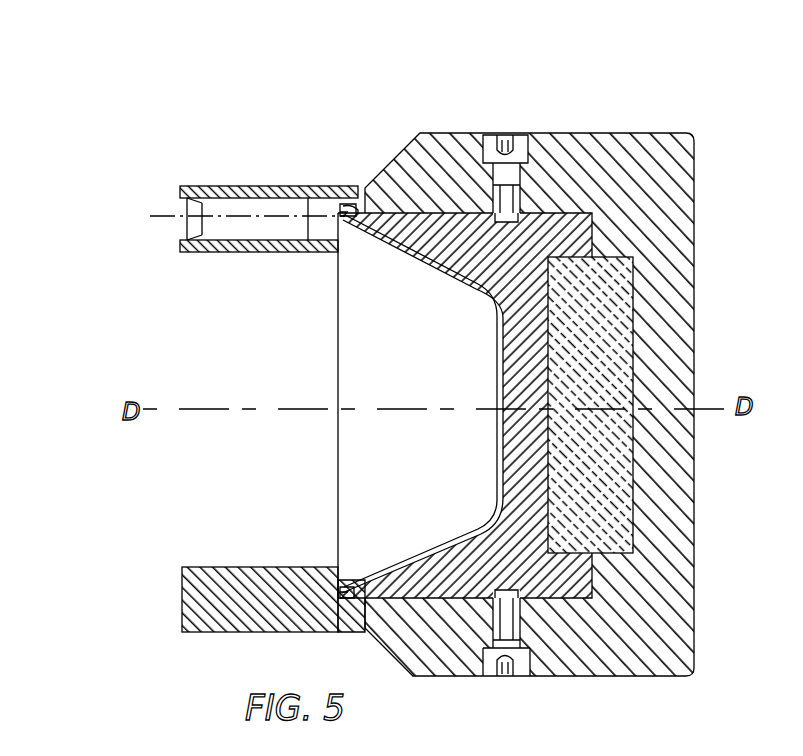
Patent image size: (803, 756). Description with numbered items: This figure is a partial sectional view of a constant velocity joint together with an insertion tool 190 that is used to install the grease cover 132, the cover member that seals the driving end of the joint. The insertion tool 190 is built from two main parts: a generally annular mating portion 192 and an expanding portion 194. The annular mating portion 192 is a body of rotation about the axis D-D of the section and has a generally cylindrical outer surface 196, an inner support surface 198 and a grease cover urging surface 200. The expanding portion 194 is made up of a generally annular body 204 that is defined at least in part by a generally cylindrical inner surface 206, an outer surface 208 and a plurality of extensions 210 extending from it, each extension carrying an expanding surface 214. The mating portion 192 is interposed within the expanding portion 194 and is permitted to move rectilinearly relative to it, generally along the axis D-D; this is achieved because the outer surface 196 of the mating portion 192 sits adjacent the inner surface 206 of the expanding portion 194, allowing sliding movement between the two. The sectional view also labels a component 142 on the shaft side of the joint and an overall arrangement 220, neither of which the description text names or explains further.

The insertion tool 190 is at (402, 359).
The shaft tube 142 is at (278, 186).
The expanding surface 214 is at (336, 210).
The expanding portion 194 is at (419, 137).
The generally cylindrical outer surface 196 is at (455, 213).
The generally cylindrical inner surface 206 is at (562, 217).
The outer surface 208 is at (611, 135).
The generally annular body 204 is at (562, 373).
The shaft assembly 220 is at (187, 365).
The grease cover urging surface 200 is at (311, 246).
The inner support surface 198 is at (440, 271).
The grease cover 132 is at (470, 305).
The annular mating portion 192 is at (418, 578).
The extensions 210 is at (380, 642).